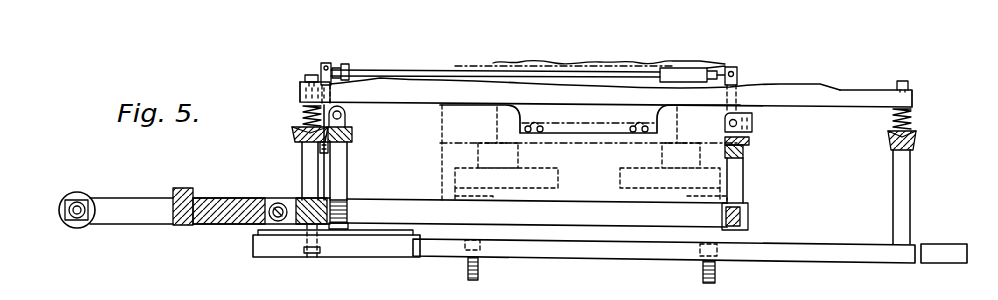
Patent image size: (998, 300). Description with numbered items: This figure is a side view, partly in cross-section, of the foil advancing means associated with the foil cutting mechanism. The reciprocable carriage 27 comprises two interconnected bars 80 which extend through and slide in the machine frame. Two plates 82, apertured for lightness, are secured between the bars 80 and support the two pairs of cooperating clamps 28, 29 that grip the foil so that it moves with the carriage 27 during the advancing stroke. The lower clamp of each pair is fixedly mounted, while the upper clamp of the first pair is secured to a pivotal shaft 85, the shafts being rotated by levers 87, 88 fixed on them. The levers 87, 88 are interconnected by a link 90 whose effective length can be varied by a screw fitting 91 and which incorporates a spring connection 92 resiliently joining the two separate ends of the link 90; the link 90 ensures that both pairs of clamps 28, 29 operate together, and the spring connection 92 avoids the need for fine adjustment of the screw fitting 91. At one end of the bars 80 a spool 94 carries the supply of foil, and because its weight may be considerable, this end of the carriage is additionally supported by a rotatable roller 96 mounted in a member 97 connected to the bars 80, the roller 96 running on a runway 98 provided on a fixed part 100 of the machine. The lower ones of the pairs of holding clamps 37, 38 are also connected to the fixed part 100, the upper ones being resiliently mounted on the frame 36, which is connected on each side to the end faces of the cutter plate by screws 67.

The reciprocable carriage 27 is at (432, 219).
The clamps 28 is at (353, 133).
The clamps 29 is at (752, 141).
The frame 36 is at (838, 90).
The holding clamps 37 is at (918, 145).
The holding clamps 38 is at (300, 137).
The screws 67 is at (634, 126).
The bars 80 is at (616, 219).
The plates 82 is at (350, 144).
The pivotal shaft 85 is at (348, 114).
The lever 87 is at (311, 77).
The lever 88 is at (750, 84).
The link 90 is at (404, 72).
The screw fitting 91 is at (334, 70).
The spring connection 92 is at (738, 76).
The spool 94 is at (84, 193).
The rotatable roller 96 is at (277, 203).
The member 97 is at (226, 224).
The runway 98 is at (382, 237).
The fixed part 100 is at (447, 248).